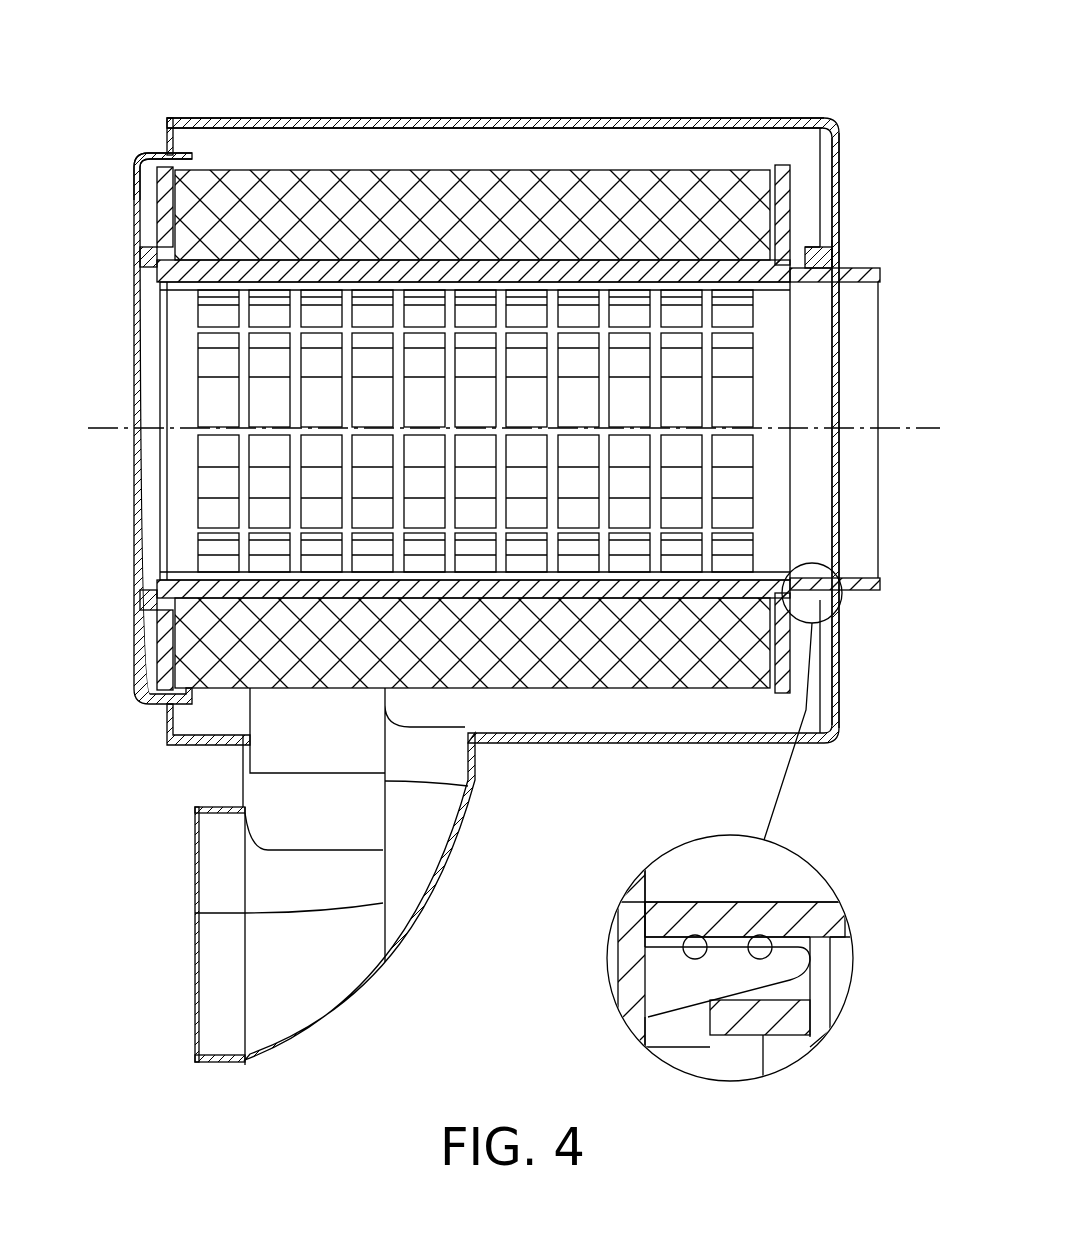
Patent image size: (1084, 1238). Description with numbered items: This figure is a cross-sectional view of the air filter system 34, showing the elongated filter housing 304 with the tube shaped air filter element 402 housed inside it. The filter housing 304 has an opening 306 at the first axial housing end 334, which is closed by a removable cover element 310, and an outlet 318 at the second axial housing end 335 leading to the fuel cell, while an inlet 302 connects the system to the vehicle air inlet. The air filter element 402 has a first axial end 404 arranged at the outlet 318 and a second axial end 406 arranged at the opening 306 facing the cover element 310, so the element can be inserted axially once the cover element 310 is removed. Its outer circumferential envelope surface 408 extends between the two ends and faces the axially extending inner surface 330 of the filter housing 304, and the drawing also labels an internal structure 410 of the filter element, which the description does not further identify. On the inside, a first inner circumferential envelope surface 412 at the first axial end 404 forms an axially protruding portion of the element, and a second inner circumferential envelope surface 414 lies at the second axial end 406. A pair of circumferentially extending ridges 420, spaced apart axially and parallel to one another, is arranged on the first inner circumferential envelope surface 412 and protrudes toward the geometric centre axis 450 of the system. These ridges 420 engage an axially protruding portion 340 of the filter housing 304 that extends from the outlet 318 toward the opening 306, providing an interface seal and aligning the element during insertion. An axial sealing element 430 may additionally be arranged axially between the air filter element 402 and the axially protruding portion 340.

The air filter system 34 is at (504, 85).
The inlet 302 is at (310, 975).
The filter housing 304 is at (815, 120).
The opening 306 is at (150, 492).
The cover element 310 is at (140, 160).
The outlet 318 is at (835, 495).
The axially extending inner surface 330 is at (265, 133).
The first axial housing end 334 is at (150, 235).
The second axial housing end 335 is at (840, 170).
The axially protruding portion 340 is at (820, 285).
The air filter element 402 is at (660, 270).
The first axial end 404 is at (820, 262).
The second axial end 406 is at (160, 280).
The outer circumferential envelope surface 408 is at (352, 170).
The grid 410 is at (428, 310).
The first inner circumferential envelope surface 412 is at (720, 938).
The second inner circumferential envelope surface 414 is at (165, 566).
The circumferentially extending ridges 420 is at (690, 935).
The axial sealing element 430 is at (740, 170).
The geometric centre axis 450 is at (884, 400).